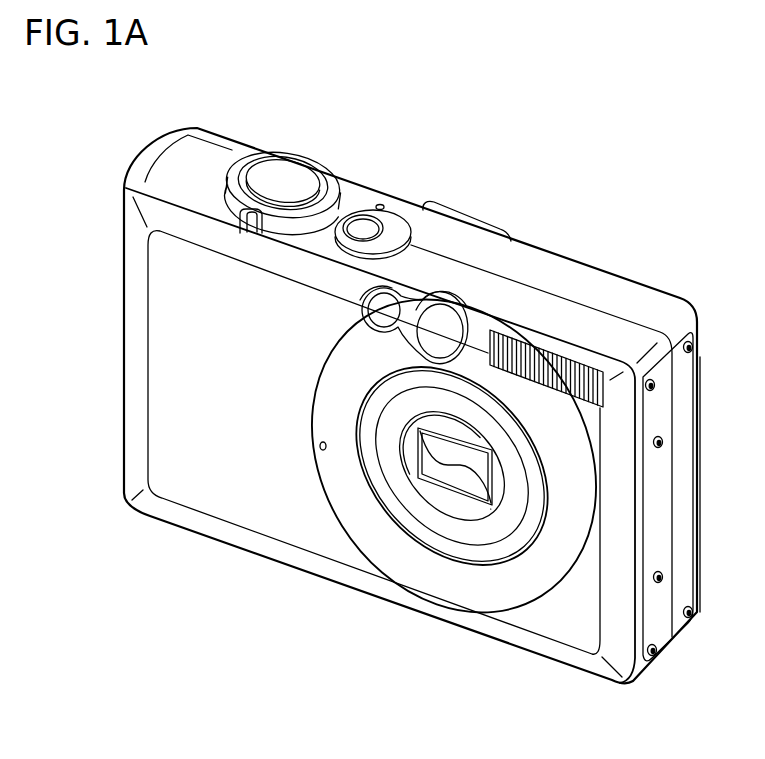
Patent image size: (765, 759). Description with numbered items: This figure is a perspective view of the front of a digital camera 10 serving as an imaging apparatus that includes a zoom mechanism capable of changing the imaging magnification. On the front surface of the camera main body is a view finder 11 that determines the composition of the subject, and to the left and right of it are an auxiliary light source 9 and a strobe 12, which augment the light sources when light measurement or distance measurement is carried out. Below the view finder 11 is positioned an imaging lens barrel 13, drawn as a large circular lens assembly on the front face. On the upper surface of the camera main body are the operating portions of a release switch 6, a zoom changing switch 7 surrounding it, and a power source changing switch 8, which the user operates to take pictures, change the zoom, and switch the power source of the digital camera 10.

The release switch 6 is at (287, 168).
The zoom changing switch 7 is at (322, 162).
The power source changing switch 8 is at (364, 228).
The auxiliary light source 9 is at (385, 308).
The digital camera 10 is at (263, 517).
The view finder 11 is at (440, 328).
The strobe 12 is at (545, 355).
The imaging lens barrel 13 is at (457, 527).